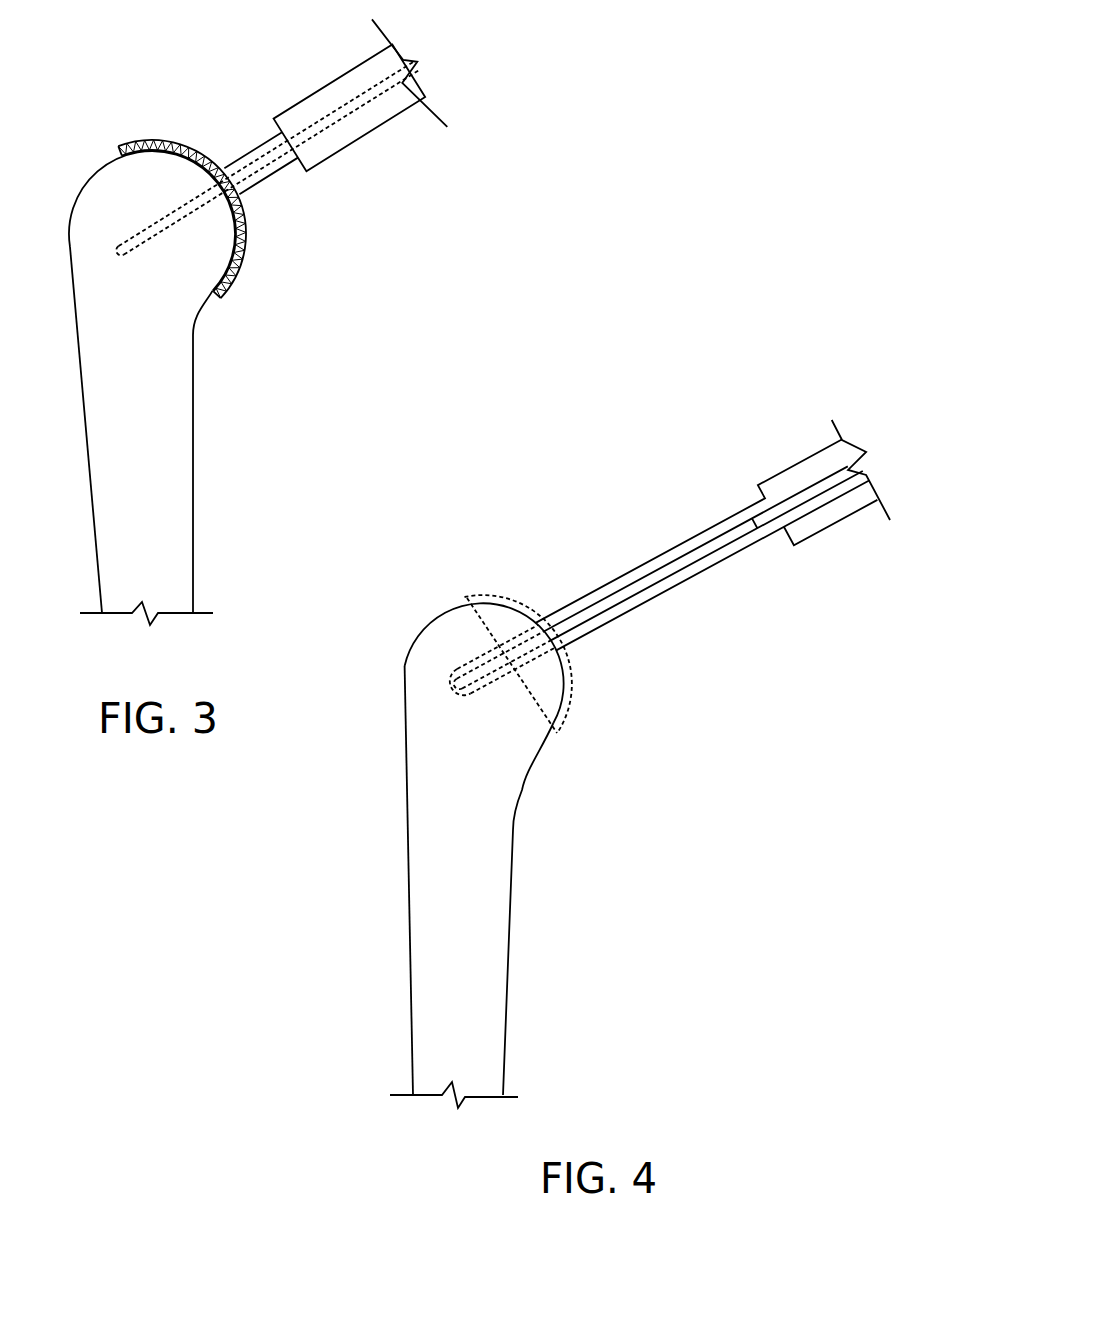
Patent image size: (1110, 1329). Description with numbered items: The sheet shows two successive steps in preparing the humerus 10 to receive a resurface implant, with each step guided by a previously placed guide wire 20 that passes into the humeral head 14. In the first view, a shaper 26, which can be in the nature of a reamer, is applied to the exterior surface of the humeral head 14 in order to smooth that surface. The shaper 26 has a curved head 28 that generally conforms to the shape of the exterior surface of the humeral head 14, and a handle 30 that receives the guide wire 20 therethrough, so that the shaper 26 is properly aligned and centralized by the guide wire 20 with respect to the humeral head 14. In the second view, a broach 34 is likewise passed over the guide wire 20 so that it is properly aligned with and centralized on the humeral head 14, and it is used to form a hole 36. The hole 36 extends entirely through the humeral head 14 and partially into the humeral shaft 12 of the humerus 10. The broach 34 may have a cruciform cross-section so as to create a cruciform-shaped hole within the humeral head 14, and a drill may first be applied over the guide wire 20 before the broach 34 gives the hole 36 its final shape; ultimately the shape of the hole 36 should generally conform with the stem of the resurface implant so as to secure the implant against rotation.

In FIG. 4, the humerus 10 is at (500, 890).
In FIG. 4, the humeral shaft 12 is at (423, 713).
In FIG. 3, the humeral head 14 is at (153, 183).
In FIG. 4, the humeral head 14 is at (560, 693).
In FIG. 3, the guide wire 20 is at (313, 120).
In FIG. 4, the guide wire 20 is at (633, 592).
In FIG. 3, the shaper 26 is at (215, 236).
In FIG. 3, the curved head 28 is at (232, 292).
In FIG. 3, the handle 30 is at (353, 130).
In FIG. 4, the broach 34 is at (652, 602).
In FIG. 4, the hole 36 is at (490, 693).